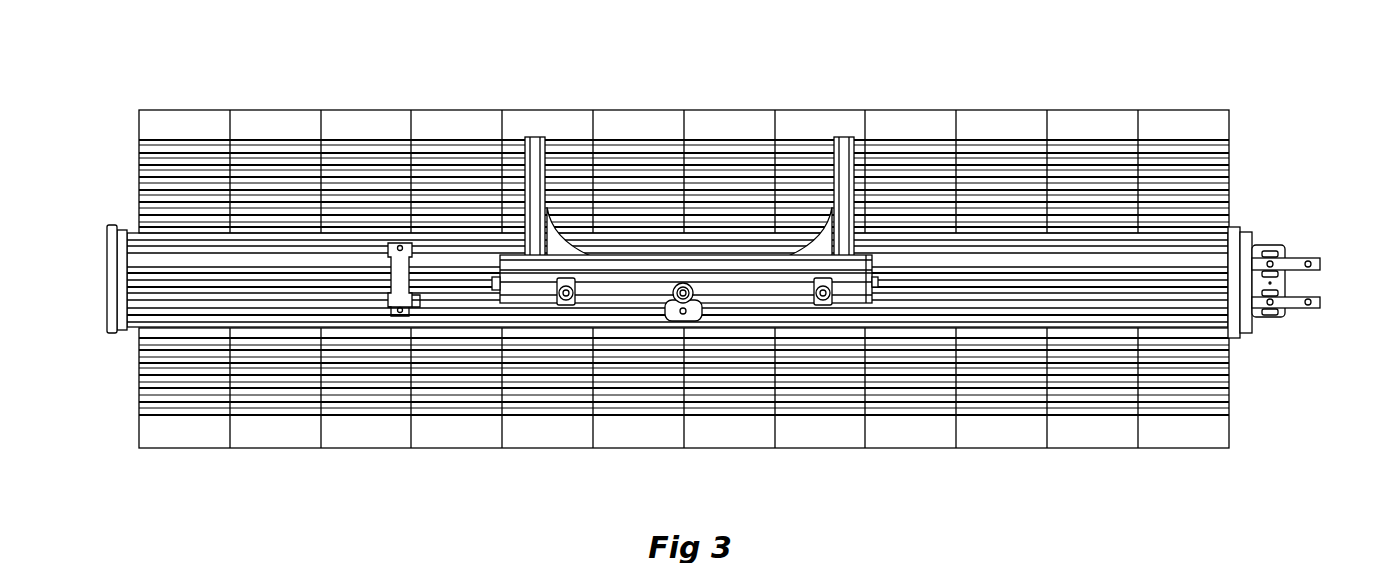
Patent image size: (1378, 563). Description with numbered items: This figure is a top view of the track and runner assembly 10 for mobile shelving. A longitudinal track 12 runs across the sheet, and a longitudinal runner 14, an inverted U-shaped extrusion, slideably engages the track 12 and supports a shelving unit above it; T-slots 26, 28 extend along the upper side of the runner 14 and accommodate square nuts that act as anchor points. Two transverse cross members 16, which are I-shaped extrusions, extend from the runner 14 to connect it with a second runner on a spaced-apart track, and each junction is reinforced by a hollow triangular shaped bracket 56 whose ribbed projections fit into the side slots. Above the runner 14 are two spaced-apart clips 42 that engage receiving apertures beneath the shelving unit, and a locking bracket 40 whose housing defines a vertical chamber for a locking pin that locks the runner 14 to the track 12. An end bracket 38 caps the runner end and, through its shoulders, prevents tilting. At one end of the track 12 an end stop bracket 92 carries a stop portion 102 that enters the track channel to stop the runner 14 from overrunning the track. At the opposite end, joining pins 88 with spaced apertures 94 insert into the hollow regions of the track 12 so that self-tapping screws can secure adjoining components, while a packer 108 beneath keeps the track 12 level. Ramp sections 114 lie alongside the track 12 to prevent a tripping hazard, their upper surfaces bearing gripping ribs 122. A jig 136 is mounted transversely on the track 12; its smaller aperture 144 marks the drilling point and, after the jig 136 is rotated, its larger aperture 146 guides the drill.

The track and runner assembly 10 is at (849, 97).
The longitudinal track 12 is at (313, 295).
The longitudinal runner 14 is at (719, 293).
The transverse cross member 16 is at (841, 137).
The slot 26 is at (733, 267).
The slot 28 is at (761, 297).
The end bracket 38 is at (878, 266).
The locking bracket 40 is at (683, 322).
The clip 42 is at (570, 308).
The triangular shaped bracket 56 is at (566, 218).
The joining pin 88 is at (1297, 259).
The end stop bracket 92 is at (103, 270).
The aperture 94 is at (1311, 263).
The stop portion 102 is at (132, 277).
The packer 108 is at (1268, 327).
The ramp section 114 is at (684, 279).
The rib 122 is at (1092, 168).
The jig 136 is at (421, 305).
The aperture 144 is at (400, 246).
The aperture 146 is at (400, 313).